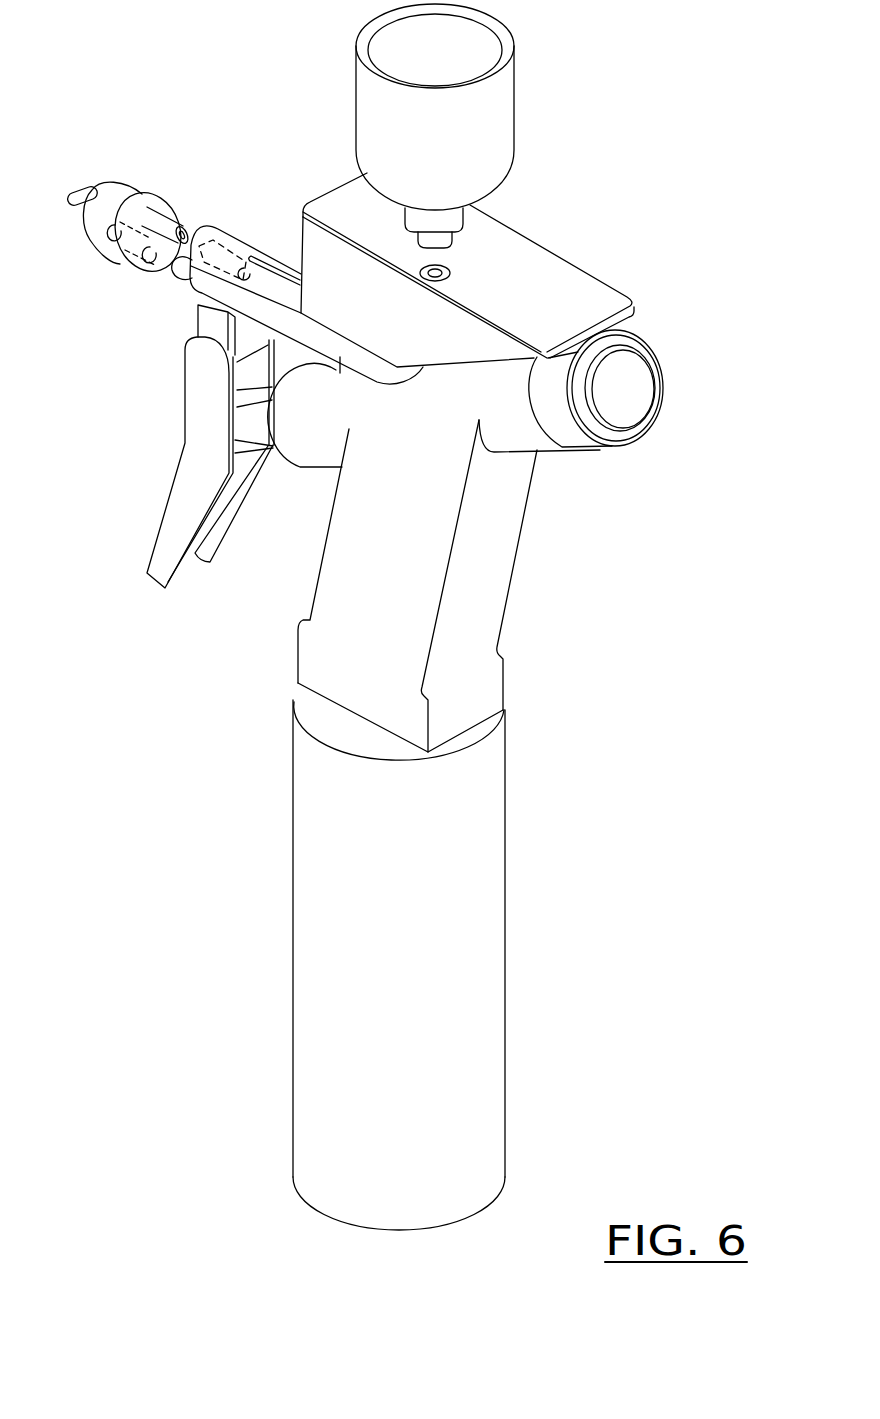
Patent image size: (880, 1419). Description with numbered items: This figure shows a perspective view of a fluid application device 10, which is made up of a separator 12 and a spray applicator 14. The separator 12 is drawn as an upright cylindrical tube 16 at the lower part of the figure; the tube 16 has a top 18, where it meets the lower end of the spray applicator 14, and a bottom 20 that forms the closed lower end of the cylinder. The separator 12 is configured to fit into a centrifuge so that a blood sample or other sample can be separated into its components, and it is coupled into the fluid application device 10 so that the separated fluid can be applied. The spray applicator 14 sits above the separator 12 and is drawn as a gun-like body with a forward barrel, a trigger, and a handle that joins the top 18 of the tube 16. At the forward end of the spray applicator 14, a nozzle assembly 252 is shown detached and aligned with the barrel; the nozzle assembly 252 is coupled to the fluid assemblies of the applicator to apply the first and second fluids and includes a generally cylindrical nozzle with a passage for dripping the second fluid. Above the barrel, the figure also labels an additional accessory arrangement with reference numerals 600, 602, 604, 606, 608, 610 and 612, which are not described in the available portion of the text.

The fluid application device 10 is at (718, 690).
The separator 12 is at (284, 956).
The spray applicator 14 is at (128, 519).
The tube 16 is at (505, 1017).
The top 18 is at (330, 725).
The bottom 20 is at (457, 1223).
The nozzle assembly 252 is at (151, 183).
The accessory assembly 600 is at (703, 278).
The body 602 is at (547, 451).
The ring 604 is at (633, 396).
The grip 606 is at (522, 597).
The plate 608 is at (605, 301).
The outlet fitting 610 is at (463, 232).
The cup 612 is at (502, 115).